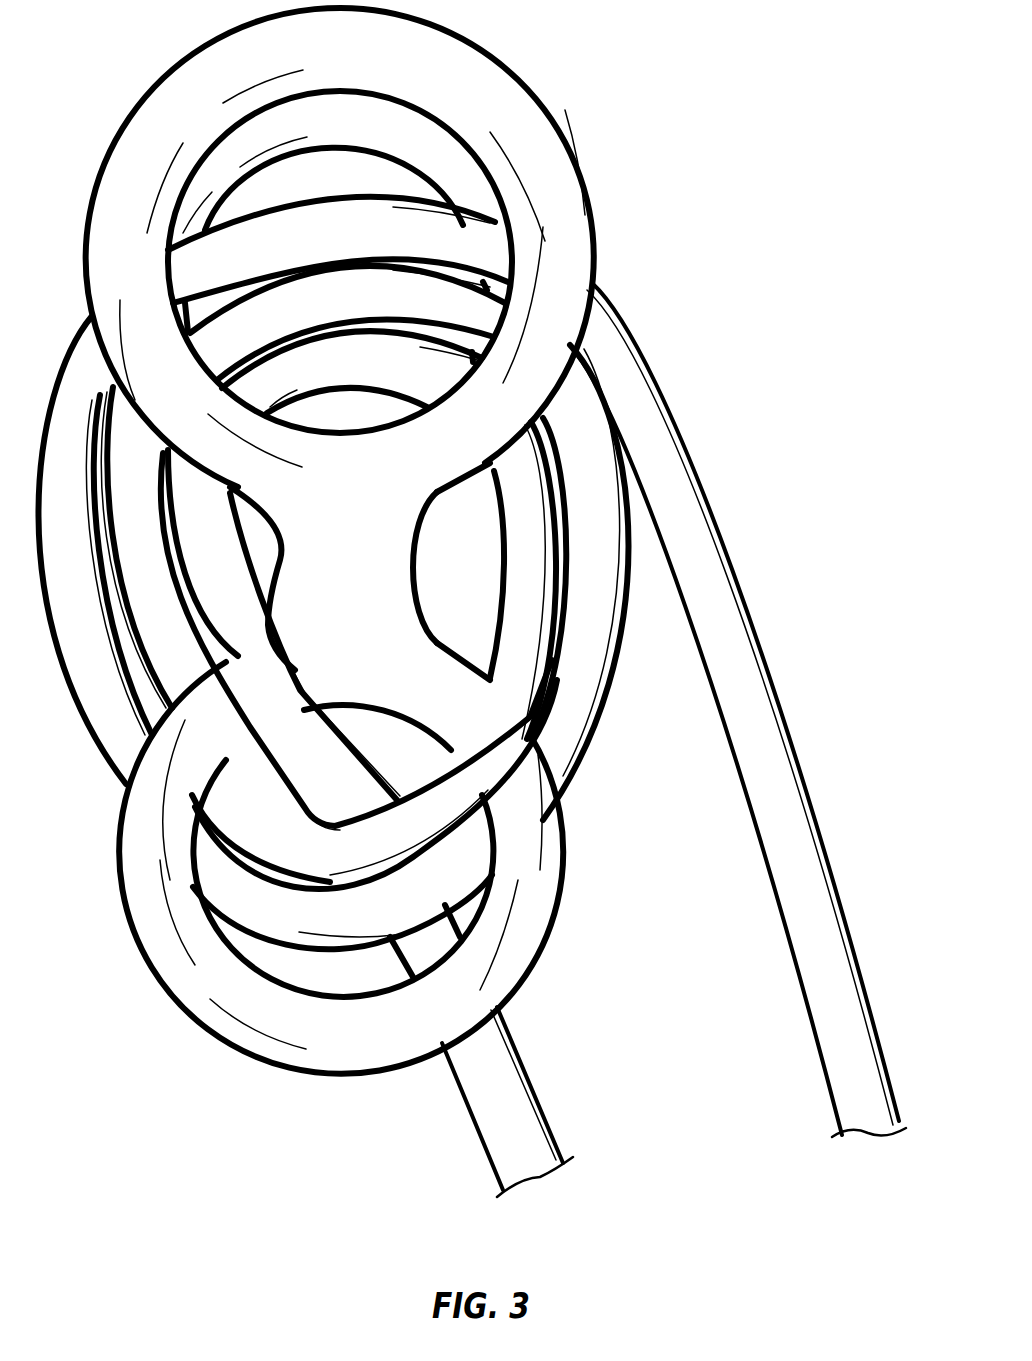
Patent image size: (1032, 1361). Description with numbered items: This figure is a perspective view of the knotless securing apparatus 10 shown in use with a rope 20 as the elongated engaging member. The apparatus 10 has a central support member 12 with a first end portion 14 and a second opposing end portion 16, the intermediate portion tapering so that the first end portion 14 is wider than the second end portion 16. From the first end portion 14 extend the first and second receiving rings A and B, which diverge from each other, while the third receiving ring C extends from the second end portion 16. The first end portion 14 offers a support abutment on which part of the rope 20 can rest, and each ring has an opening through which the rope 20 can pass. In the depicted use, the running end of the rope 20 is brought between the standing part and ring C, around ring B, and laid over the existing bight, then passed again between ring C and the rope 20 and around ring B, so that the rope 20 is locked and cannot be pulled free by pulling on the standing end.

The knotless securing apparatus 10 is at (615, 119).
The central support member 12 is at (365, 590).
The first end portion 14 is at (440, 497).
The second opposing end portion 16 is at (437, 643).
The elongated engaging member 20 is at (726, 609).